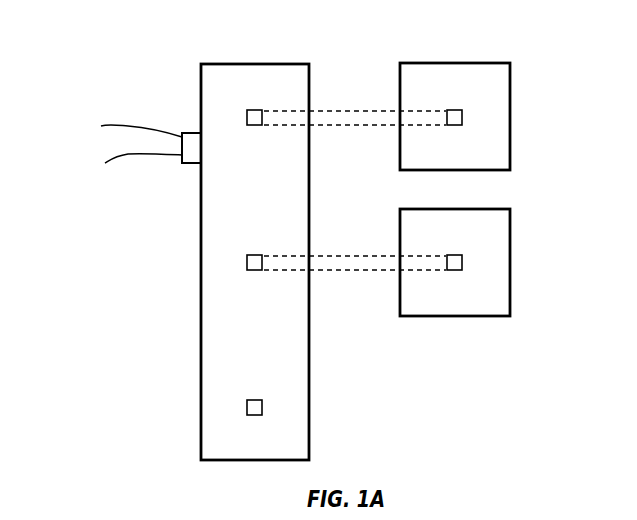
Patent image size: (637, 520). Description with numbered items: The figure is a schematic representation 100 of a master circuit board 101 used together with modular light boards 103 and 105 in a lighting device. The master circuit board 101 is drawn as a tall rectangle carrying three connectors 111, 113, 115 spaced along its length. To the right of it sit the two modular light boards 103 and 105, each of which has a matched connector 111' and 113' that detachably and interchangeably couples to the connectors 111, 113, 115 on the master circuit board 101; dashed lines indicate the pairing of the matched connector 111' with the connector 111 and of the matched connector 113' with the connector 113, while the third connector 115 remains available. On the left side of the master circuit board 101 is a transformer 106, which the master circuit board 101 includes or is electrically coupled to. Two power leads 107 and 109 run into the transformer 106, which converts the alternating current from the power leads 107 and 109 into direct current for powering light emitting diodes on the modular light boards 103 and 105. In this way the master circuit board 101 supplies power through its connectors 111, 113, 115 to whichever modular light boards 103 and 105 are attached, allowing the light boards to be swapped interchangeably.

The schematic representation 100 is at (105, 43).
The master circuit board 101 is at (309, 327).
The modular light board 103 is at (456, 63).
The modular light board 105 is at (456, 209).
The transformer 106 is at (188, 166).
The power lead 107 is at (118, 154).
The power lead 109 is at (132, 126).
The connector 111 is at (300, 101).
The matched connector 111' is at (504, 99).
The connector 113 is at (300, 245).
The matched connector 113' is at (504, 245).
The connector 115 is at (247, 407).